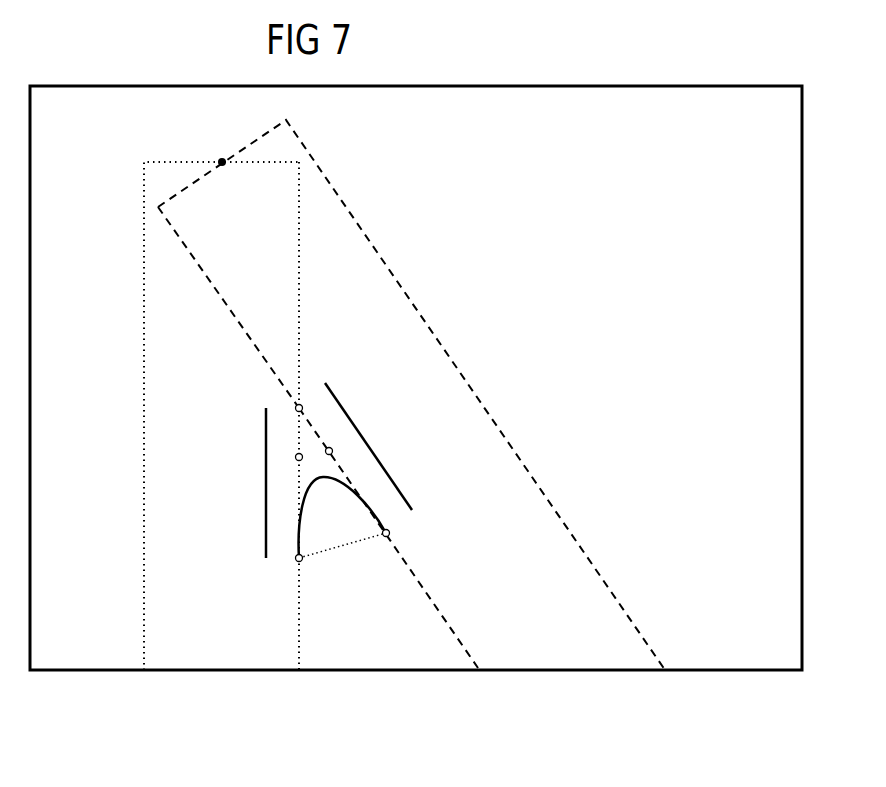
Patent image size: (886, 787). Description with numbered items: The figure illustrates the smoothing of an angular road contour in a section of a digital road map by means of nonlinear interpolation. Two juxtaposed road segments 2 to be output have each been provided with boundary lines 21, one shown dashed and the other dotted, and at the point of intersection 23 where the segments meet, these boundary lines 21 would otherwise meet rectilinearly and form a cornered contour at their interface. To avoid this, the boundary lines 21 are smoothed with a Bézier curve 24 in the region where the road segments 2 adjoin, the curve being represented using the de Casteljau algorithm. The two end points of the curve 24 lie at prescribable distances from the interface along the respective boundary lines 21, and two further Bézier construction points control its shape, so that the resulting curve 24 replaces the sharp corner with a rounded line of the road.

The road segment 2 is at (172, 492).
The boundary line 21 is at (299, 641).
The point of intersection 23 is at (222, 162).
The curve 24 is at (322, 478).